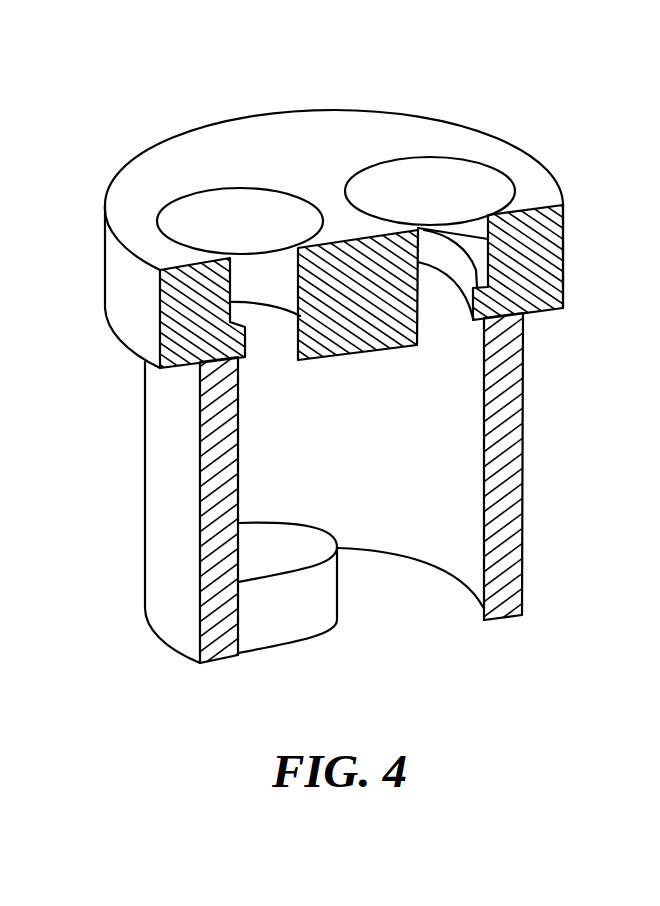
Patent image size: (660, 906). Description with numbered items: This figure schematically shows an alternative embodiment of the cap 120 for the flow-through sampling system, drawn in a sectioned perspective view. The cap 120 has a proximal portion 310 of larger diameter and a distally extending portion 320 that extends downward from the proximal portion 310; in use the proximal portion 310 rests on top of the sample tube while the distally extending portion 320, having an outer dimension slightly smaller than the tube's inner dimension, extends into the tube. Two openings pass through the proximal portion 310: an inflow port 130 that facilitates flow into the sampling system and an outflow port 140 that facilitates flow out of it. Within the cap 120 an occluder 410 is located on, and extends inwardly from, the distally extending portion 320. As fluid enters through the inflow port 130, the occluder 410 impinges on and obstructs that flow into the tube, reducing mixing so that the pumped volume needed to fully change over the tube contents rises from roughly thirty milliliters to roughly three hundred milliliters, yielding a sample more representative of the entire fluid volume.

The cap 120 is at (564, 405).
The inflow port 130 is at (228, 218).
The outflow port 140 is at (435, 203).
The proximal portion 310 is at (300, 143).
The distally extending portion 320 is at (162, 459).
The occluder 410 is at (308, 607).